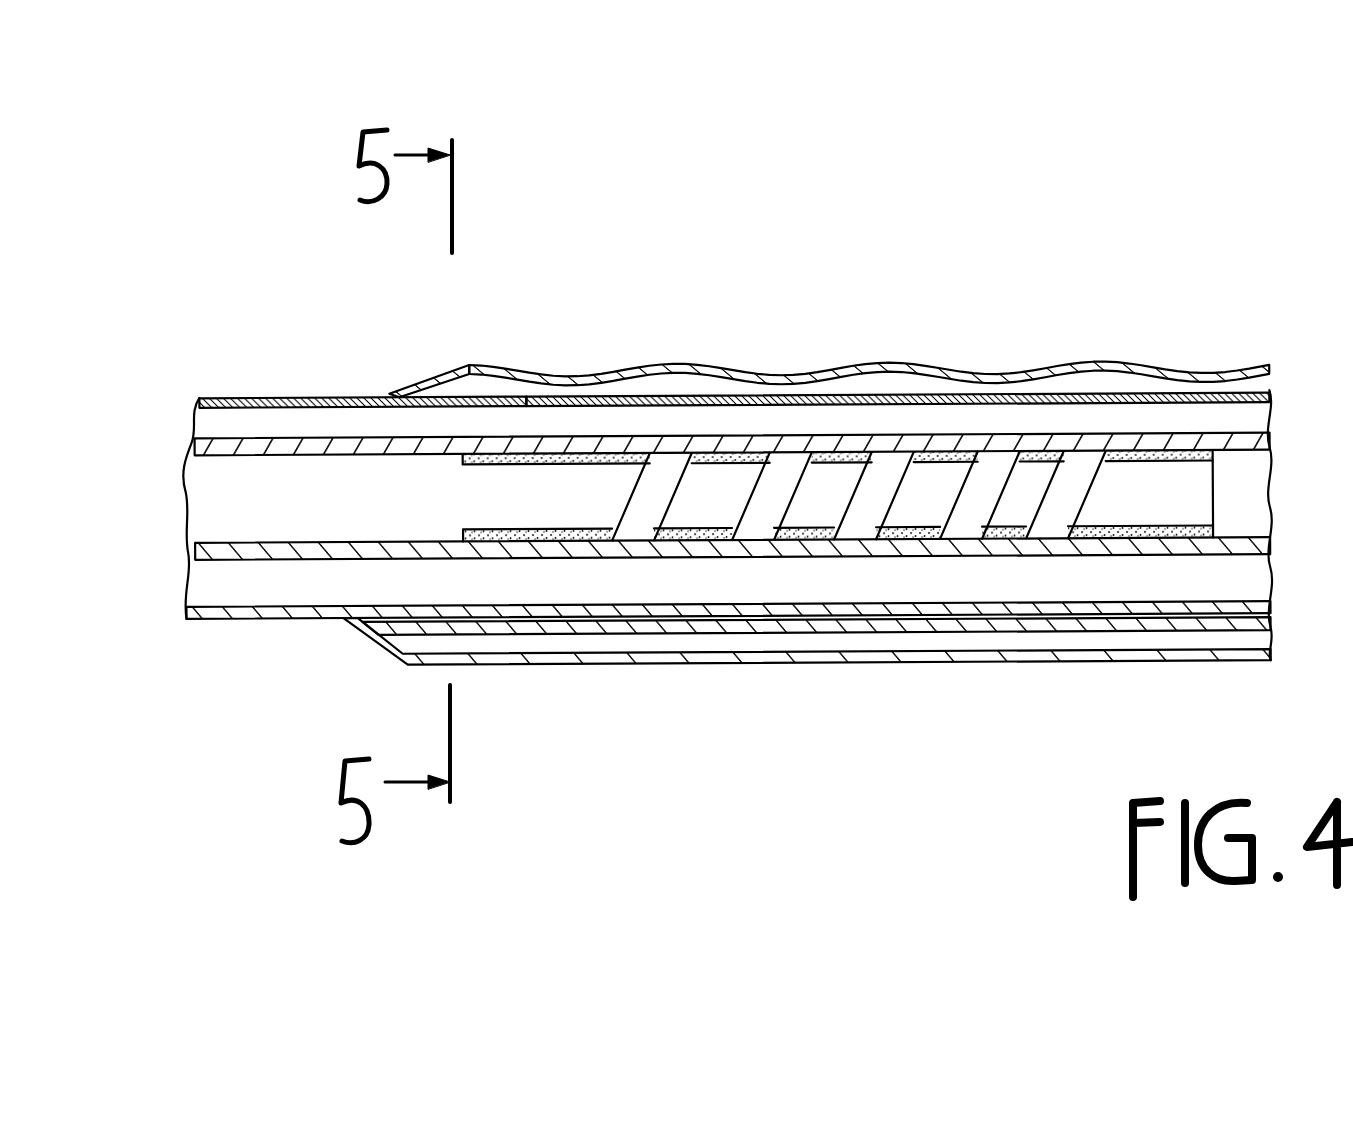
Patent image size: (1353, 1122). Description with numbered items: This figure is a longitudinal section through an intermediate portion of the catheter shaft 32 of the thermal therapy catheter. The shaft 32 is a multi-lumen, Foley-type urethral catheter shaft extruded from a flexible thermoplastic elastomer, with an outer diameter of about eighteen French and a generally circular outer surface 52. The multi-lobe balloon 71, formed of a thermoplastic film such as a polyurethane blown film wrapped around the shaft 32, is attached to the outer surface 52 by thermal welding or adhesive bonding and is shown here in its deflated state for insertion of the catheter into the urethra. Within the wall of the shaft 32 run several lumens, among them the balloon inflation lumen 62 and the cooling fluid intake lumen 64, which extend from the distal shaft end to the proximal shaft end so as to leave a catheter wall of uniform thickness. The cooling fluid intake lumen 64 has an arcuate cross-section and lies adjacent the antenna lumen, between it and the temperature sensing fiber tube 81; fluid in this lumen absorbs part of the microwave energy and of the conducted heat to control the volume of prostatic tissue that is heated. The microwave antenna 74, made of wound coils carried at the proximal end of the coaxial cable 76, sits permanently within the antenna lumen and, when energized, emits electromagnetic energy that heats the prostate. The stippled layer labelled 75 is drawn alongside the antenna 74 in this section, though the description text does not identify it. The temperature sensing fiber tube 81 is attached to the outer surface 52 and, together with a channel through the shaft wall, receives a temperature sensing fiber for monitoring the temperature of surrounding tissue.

The catheter shaft 32 is at (305, 400).
The outer surface 52 is at (527, 400).
The balloon inflation lumen 62 is at (222, 418).
The cooling fluid intake lumen 64 is at (202, 585).
The multi-lobe balloon 71 is at (703, 365).
The microwave antenna 74 is at (980, 477).
The conductive adhesive 75 is at (833, 463).
The coaxial cable 76 is at (1187, 487).
The temperature sensing fiber tube 81 is at (765, 662).